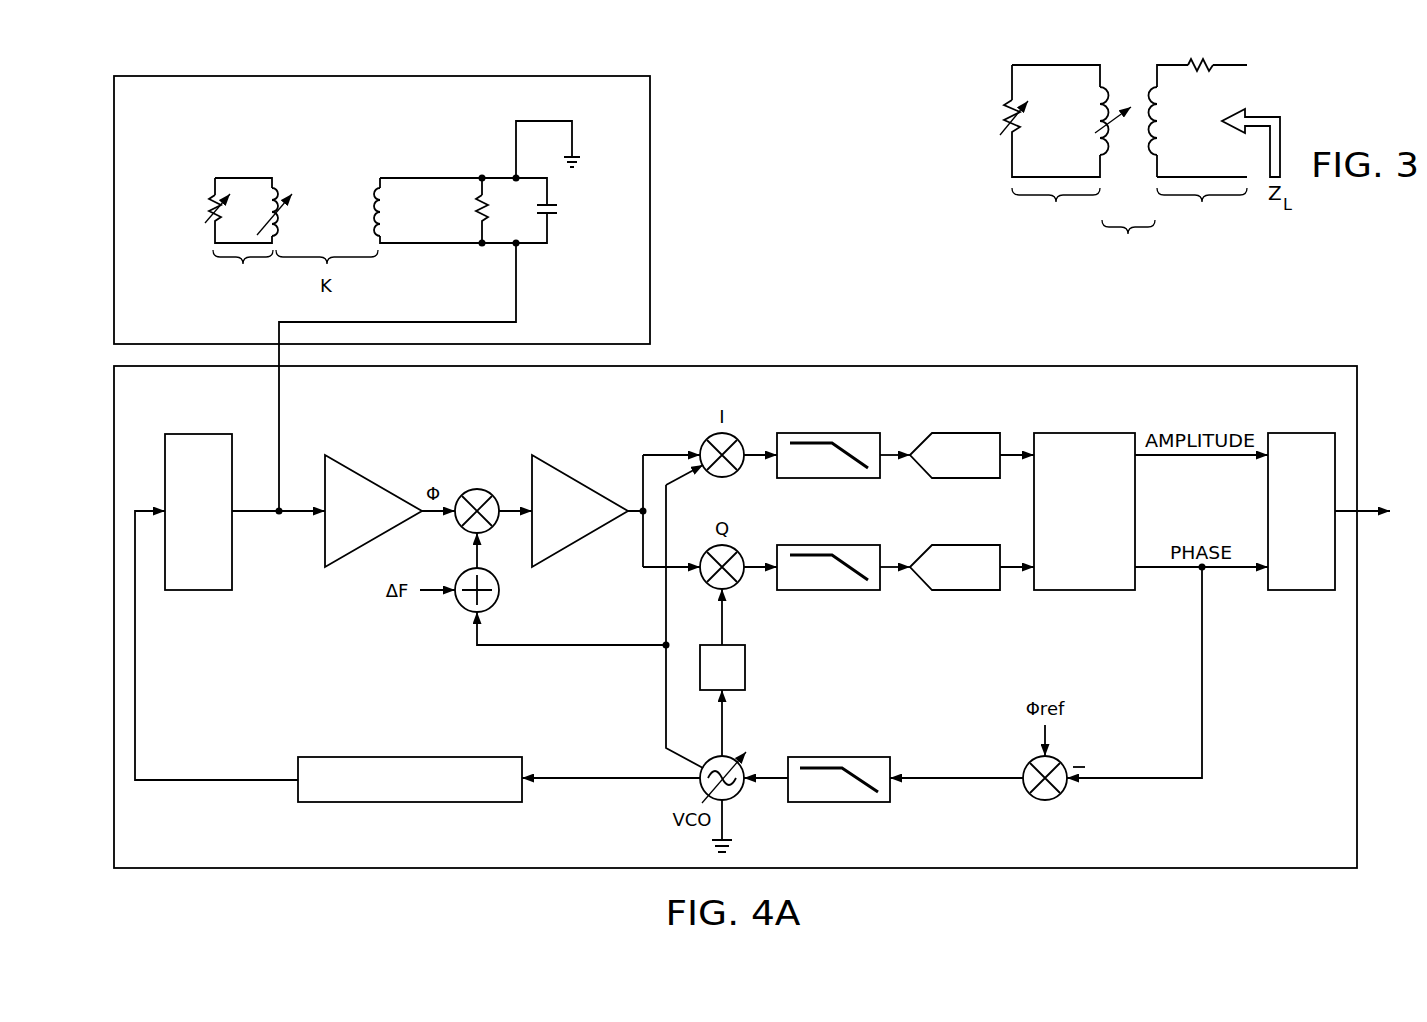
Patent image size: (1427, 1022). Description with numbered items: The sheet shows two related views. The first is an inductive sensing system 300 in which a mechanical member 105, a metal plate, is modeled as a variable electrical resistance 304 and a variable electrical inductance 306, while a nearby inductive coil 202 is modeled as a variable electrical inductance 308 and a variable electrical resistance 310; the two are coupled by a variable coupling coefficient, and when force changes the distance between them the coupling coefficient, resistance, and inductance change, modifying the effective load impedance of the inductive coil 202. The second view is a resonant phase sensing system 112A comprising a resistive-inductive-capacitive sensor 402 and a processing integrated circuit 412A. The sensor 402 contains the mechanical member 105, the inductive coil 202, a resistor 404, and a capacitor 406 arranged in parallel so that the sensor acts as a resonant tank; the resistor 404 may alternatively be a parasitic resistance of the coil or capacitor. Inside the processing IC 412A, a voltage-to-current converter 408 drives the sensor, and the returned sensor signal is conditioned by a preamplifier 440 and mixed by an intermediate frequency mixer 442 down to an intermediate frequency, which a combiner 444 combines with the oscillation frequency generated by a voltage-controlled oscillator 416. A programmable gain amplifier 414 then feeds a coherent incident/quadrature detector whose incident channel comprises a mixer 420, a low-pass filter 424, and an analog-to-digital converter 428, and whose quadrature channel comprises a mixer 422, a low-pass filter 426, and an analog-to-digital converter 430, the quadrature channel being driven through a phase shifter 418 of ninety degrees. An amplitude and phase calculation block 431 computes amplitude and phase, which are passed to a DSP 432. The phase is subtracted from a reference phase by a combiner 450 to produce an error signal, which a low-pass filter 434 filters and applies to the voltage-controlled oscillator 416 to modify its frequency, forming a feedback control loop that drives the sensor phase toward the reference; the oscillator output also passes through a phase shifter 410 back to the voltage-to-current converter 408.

In FIG. 3, the inductive sensing system 300 is at (1318, 85).
In FIG. 4A, the variable electrical resistance 304 is at (208, 212).
In FIG. 3, the variable electrical resistance 304 is at (1006, 118).
In FIG. 4A, the variable electrical inductance 306 is at (285, 222).
In FIG. 3, the variable electrical inductance 306 is at (1108, 89).
In FIG. 3, the variable electrical inductance 308 is at (1151, 156).
In FIG. 3, the variable electrical resistance 310 is at (1200, 62).
In FIG. 4A, the mechanical member 105 is at (243, 273).
In FIG. 3, the mechanical member 105 is at (1056, 209).
In FIG. 4A, the inductive coil 202 is at (373, 202).
In FIG. 3, the inductive coil 202 is at (1198, 158).
In FIG. 4A, the resistive-inductive-capacitive sensor 402 is at (268, 74).
In FIG. 4A, the resistor 404 is at (478, 212).
In FIG. 4A, the capacitor 406 is at (558, 211).
In FIG. 4A, the resonant phase sensing system 112A is at (727, 315).
In FIG. 4A, the processing integrated circuit 412A is at (904, 365).
In FIG. 4A, the voltage-to-current converter 408 is at (197, 434).
In FIG. 4A, the preamplifier 440 is at (375, 479).
In FIG. 4A, the intermediate frequency mixer 442 is at (488, 491).
In FIG. 4A, the programmable gain amplifier 414 is at (580, 479).
In FIG. 4A, the combiner 444 is at (461, 607).
In FIG. 4A, the mixer 420 is at (738, 473).
In FIG. 4A, the mixer 422 is at (738, 585).
In FIG. 4A, the low-pass filter 424 is at (830, 479).
In FIG. 4A, the low-pass filter 426 is at (830, 591).
In FIG. 4A, the analog-to-digital converter 428 is at (952, 479).
In FIG. 4A, the analog-to-digital converter 430 is at (952, 591).
In FIG. 4A, the amplitude and phase calculation block 431 is at (1084, 591).
In FIG. 4A, the DSP 432 is at (1281, 550).
In FIG. 4A, the phase shifter 418 is at (745, 667).
In FIG. 4A, the voltage-controlled oscillator 416 is at (735, 797).
In FIG. 4A, the low-pass filter 434 is at (838, 803).
In FIG. 4A, the combiner 450 is at (1061, 796).
In FIG. 4A, the phase shifter 410 is at (410, 803).